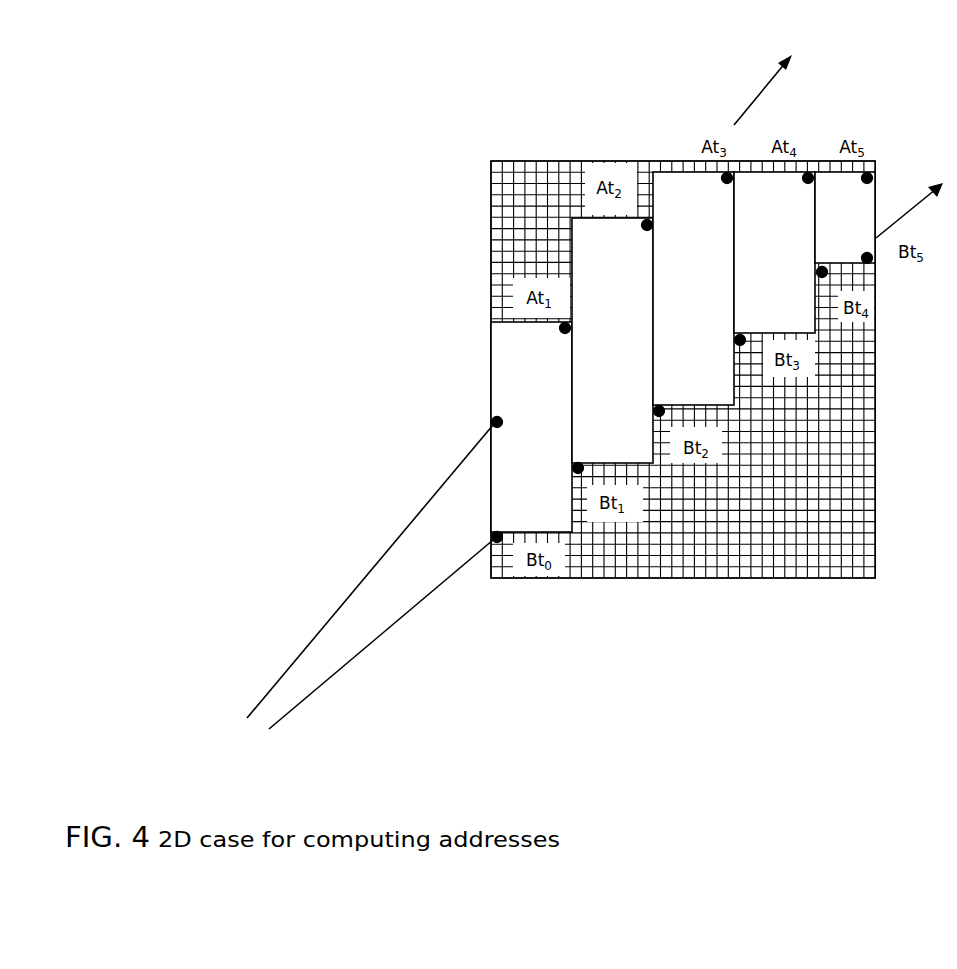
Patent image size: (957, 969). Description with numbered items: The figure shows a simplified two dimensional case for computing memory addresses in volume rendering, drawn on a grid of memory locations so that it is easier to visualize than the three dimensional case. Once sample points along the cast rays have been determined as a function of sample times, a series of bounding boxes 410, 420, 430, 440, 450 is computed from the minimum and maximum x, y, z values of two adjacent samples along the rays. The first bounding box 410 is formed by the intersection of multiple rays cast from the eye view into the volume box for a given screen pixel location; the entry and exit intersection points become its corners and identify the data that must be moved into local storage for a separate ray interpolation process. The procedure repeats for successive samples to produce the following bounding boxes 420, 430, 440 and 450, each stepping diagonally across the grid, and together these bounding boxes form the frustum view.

The bounding box 410 is at (516, 379).
The bounding box 420 is at (596, 308).
The bounding box 430 is at (680, 273).
The bounding box 440 is at (761, 239).
The bounding box 450 is at (830, 216).